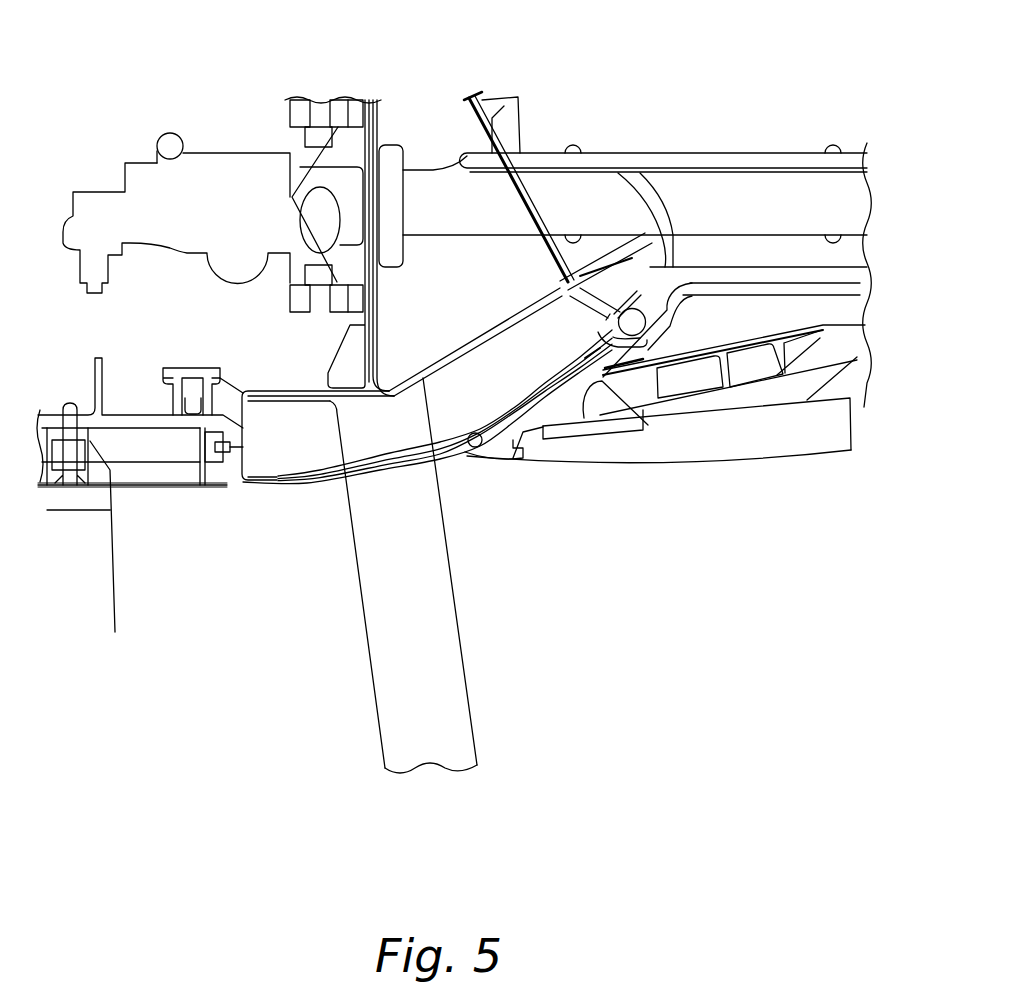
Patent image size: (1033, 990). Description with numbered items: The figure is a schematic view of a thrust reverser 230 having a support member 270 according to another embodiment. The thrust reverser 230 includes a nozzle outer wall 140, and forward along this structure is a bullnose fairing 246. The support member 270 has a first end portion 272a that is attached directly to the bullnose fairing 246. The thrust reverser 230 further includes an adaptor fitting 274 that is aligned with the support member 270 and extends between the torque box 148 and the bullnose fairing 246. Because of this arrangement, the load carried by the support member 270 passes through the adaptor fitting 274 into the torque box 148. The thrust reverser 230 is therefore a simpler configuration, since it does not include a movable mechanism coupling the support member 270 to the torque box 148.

The thrust reverser 230 is at (657, 66).
The torque box 148 is at (375, 305).
The nozzle outer wall 140 is at (688, 447).
The bullnose fairing 246 is at (272, 488).
The support member 270 is at (447, 670).
The first end portion 272a is at (423, 505).
The adaptor fitting 274 is at (362, 426).